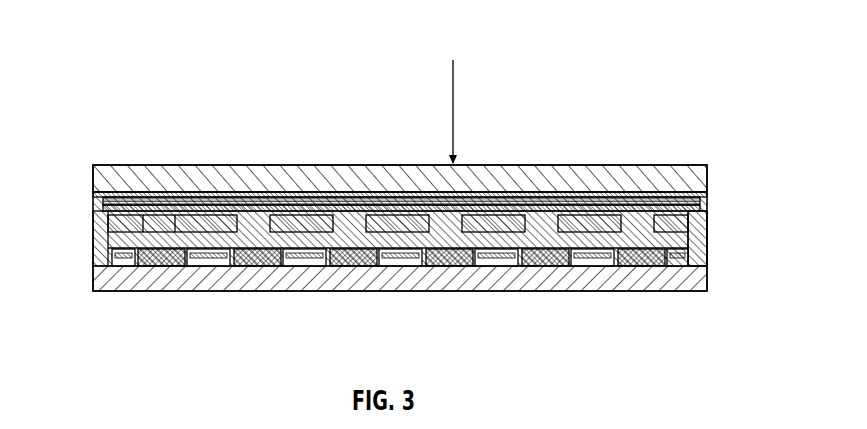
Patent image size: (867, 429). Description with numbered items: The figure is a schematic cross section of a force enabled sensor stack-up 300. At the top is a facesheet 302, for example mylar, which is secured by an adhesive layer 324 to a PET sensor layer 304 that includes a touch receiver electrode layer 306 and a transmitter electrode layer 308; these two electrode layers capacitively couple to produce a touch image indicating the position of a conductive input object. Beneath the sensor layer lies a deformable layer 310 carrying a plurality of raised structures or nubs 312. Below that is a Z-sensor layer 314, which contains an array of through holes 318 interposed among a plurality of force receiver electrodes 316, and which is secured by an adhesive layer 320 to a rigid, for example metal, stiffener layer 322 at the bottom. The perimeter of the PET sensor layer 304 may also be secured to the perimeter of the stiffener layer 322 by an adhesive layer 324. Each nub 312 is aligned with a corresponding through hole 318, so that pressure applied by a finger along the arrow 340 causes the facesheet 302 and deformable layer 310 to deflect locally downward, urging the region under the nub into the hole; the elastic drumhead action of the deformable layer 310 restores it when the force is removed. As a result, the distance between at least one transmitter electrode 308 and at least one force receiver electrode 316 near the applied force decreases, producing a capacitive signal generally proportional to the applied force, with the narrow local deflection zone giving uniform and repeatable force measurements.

The force enabled sensor stack-up 300 is at (143, 60).
The facesheet 302 is at (262, 162).
The PET sensor layer 304 is at (548, 188).
The touch receiver electrode layer 306 is at (708, 191).
The transmitter electrode layer 308 is at (707, 209).
The deformable layer 310 is at (400, 280).
The raised structures (nubs) 312 is at (431, 158).
The Z-sensor layer 314 is at (92, 267).
The force receiver electrodes 316 is at (210, 258).
The through holes 318 is at (257, 258).
The adhesive layer 320 is at (676, 268).
The stiffener layer 322 is at (547, 293).
The adhesive layer 324 is at (613, 188).
The arrow 340 is at (455, 88).